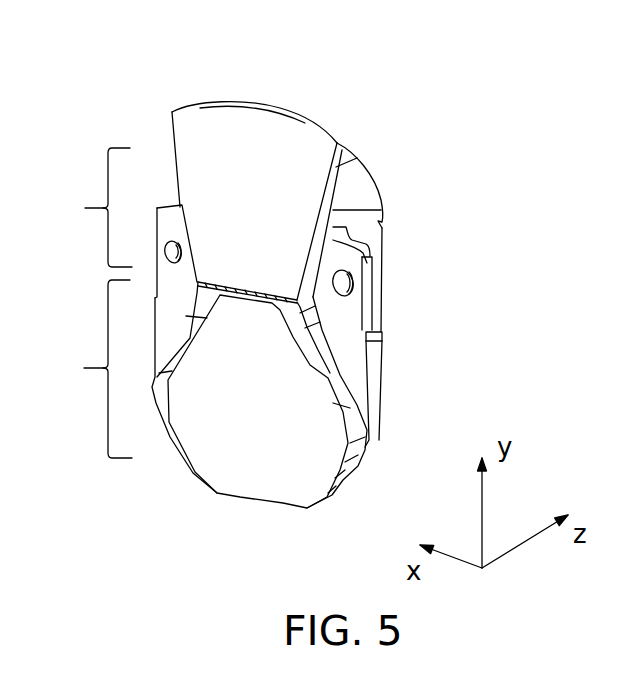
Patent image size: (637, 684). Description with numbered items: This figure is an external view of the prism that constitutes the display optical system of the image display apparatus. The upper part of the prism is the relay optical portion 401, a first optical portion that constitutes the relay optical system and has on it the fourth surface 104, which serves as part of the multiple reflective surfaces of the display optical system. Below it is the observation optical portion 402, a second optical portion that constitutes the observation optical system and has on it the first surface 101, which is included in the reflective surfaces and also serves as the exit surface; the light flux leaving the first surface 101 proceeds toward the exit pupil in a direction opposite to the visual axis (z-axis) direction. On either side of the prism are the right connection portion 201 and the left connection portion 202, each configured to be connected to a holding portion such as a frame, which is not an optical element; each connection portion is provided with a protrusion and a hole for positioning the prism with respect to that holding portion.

The fourth surface 104 is at (282, 163).
The left connection portion 202 is at (172, 222).
The right connection portion 201 is at (367, 263).
The first surface 101 is at (280, 415).
The relay optical portion 401 is at (79, 207).
The observation optical portion 402 is at (76, 369).